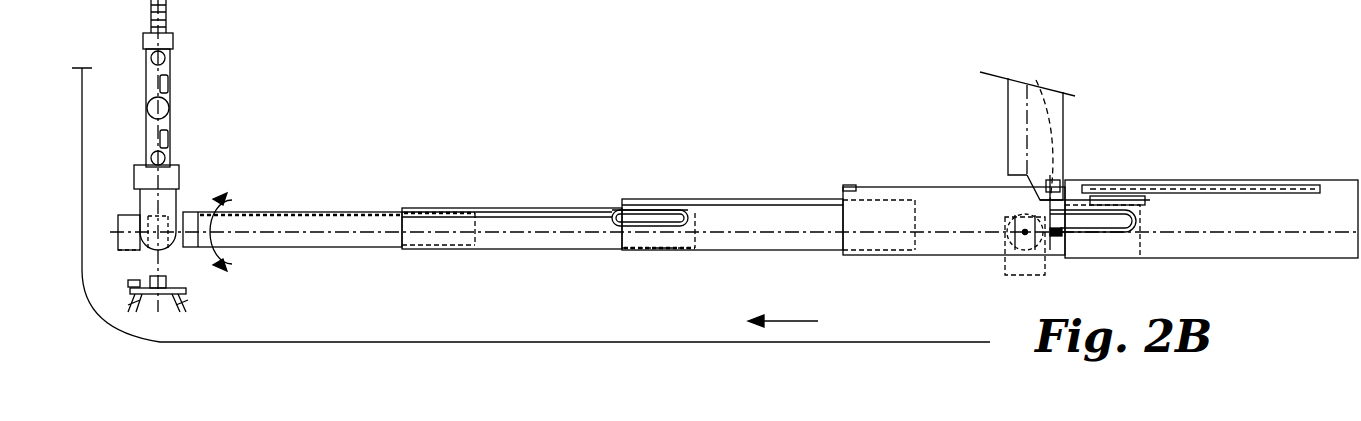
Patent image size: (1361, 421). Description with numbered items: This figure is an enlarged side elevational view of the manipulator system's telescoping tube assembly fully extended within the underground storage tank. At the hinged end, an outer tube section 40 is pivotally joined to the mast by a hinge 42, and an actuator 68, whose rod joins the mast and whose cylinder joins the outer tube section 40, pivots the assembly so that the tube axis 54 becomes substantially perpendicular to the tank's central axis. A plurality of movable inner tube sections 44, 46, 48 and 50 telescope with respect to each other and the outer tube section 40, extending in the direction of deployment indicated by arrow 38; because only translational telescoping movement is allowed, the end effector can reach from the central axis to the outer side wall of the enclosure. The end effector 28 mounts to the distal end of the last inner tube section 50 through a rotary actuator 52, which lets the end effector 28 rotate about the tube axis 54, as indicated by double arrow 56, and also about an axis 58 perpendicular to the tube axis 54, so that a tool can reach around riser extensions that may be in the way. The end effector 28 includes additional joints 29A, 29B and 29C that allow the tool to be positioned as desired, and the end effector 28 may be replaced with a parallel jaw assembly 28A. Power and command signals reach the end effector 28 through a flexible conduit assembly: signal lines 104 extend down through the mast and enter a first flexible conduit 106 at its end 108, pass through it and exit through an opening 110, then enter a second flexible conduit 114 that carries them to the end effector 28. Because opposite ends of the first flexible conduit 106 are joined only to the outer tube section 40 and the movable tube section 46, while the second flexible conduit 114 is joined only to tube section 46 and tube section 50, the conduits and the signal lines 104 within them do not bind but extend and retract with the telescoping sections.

The end effector 28 is at (176, 98).
The parallel jaw assembly 28A is at (190, 314).
The joint 29A is at (172, 152).
The joint 29B is at (148, 107).
The joint 29C is at (162, 56).
The arrow 38 is at (785, 320).
The outer tube section 40 is at (1192, 180).
The hinge 42 is at (1058, 188).
The inner tube section 44 is at (936, 255).
The inner tube section 46 is at (716, 250).
The inner tube section 48 is at (544, 250).
The inner tube section 50 is at (326, 249).
The rotary actuator 52 is at (178, 196).
The tube axis 54 is at (237, 222).
The double arrow 56 is at (220, 200).
The axis 58 is at (160, 245).
The actuator 68 is at (1120, 188).
The signal lines 104 is at (617, 210).
The first flexible conduit 106 is at (1118, 236).
The end 108 is at (1055, 246).
The opening 110 is at (622, 208).
The second flexible conduit 114 is at (520, 208).